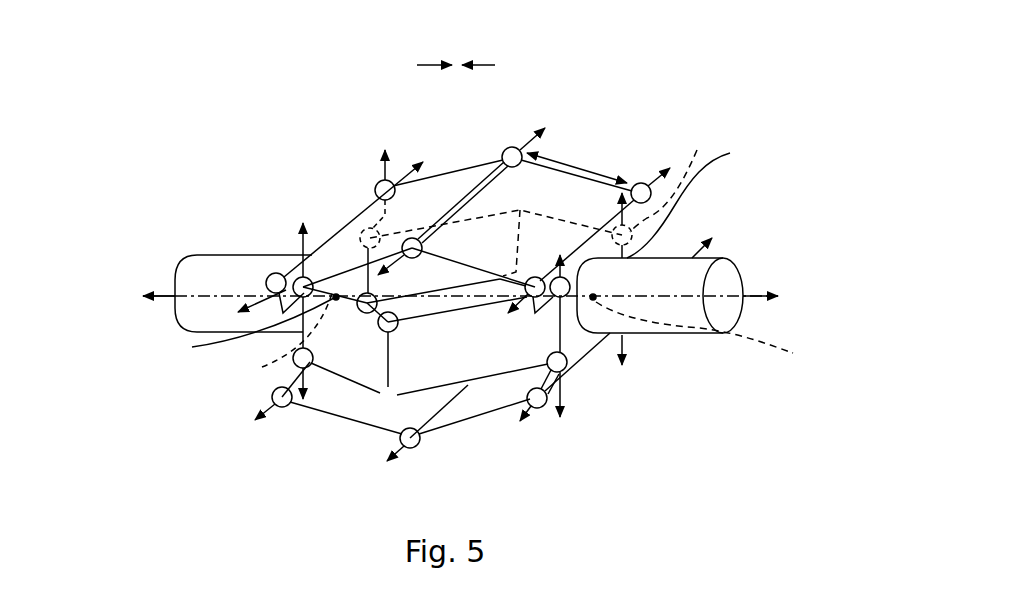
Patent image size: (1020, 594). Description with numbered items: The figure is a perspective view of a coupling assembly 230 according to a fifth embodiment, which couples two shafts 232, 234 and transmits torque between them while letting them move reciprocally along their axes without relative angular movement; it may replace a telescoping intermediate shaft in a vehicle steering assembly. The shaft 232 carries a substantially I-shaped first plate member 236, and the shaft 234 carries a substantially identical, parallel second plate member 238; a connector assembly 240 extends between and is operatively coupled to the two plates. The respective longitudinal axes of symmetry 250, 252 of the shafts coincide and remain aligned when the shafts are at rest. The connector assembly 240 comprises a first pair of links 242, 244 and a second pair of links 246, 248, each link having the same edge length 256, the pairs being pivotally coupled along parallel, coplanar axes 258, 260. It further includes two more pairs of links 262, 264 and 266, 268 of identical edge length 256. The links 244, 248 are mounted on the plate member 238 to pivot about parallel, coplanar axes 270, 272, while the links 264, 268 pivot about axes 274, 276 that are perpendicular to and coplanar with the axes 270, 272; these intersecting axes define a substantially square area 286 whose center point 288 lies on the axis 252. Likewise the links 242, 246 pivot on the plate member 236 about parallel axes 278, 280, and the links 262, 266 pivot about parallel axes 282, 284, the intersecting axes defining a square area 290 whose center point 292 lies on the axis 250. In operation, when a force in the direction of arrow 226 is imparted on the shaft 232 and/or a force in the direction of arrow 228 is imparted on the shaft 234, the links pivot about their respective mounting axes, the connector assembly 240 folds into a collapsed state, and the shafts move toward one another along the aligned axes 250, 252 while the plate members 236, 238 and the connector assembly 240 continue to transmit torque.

The arrow 226 is at (430, 65).
The arrow 228 is at (487, 65).
The coupling assembly 230 is at (293, 168).
The shaft 232 is at (208, 257).
The shaft 234 is at (705, 258).
The first plate member 236 is at (287, 370).
The second plate member 238 is at (583, 350).
The connector assembly 240 is at (470, 388).
The link 242 is at (398, 219).
The link 244 is at (513, 202).
The link 246 is at (340, 413).
The link 248 is at (437, 436).
The longitudinal axis of symmetry 250 is at (157, 292).
The longitudinal axis of symmetry 252 is at (786, 294).
The edge length 256 is at (588, 165).
The axis 258 is at (517, 147).
The axis 260 is at (400, 449).
The link 262 is at (366, 280).
The link 264 is at (664, 189).
The link 266 is at (342, 372).
The link 268 is at (440, 360).
The axis 270 is at (637, 183).
The axis 272 is at (695, 250).
The axis 274 is at (625, 340).
The axis 276 is at (567, 392).
The axis 278 is at (413, 175).
The axis 280 is at (268, 410).
The axis 282 is at (380, 168).
The axis 284 is at (300, 247).
The square area 286 is at (702, 199).
The center point 288 is at (708, 345).
The square area 290 is at (238, 331).
The center point 292 is at (274, 335).